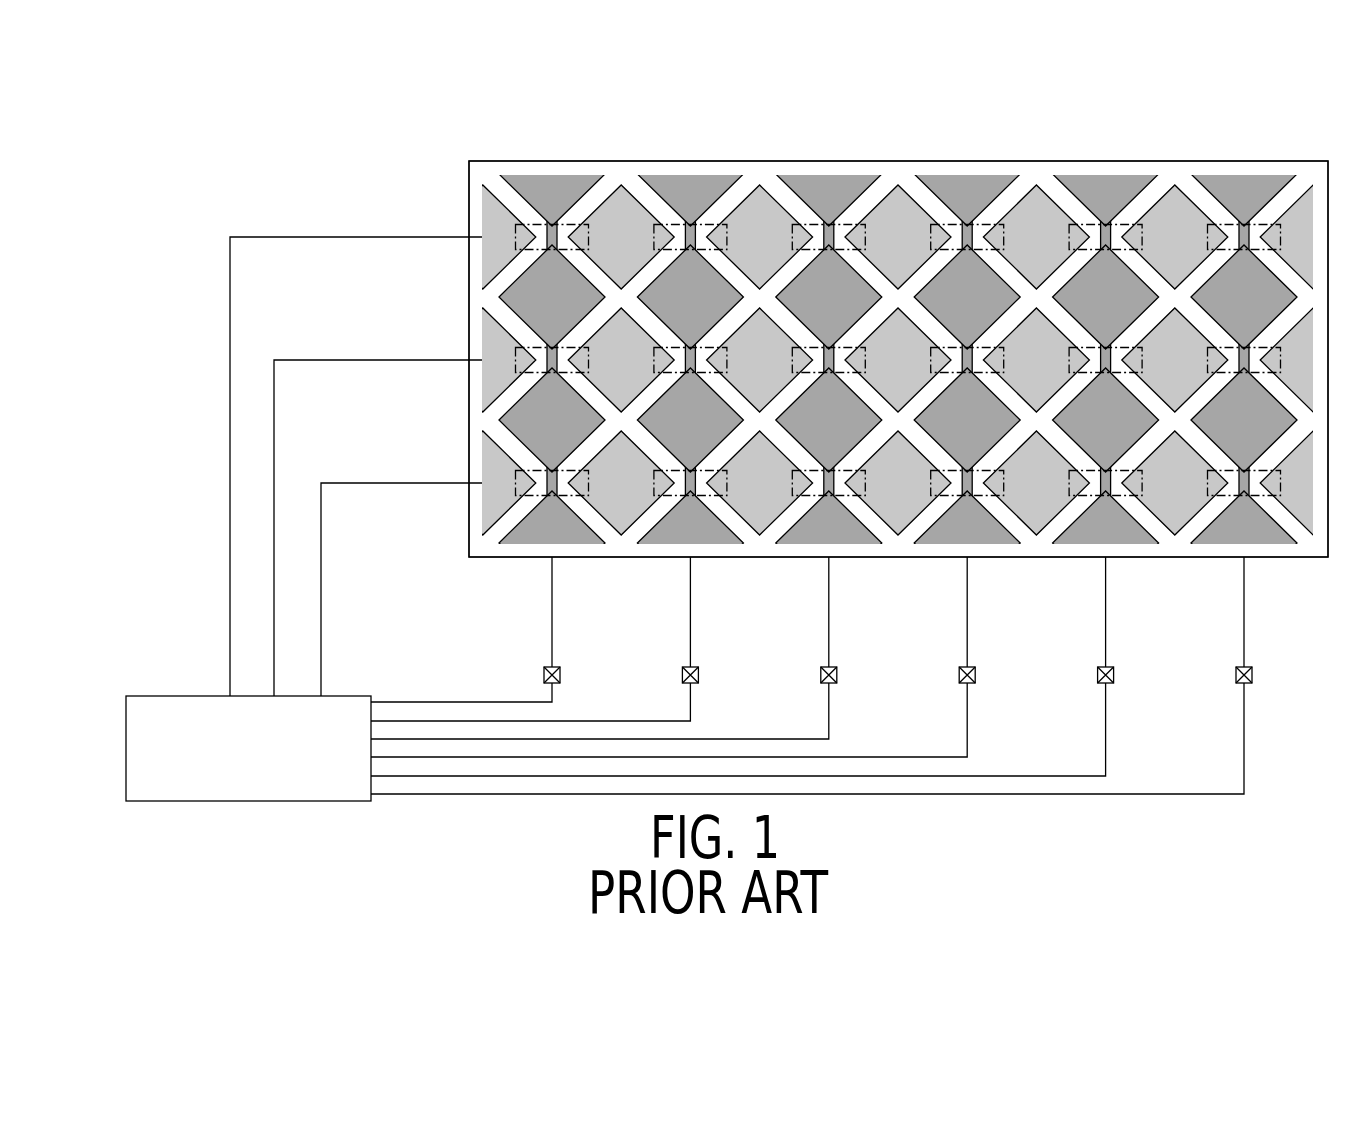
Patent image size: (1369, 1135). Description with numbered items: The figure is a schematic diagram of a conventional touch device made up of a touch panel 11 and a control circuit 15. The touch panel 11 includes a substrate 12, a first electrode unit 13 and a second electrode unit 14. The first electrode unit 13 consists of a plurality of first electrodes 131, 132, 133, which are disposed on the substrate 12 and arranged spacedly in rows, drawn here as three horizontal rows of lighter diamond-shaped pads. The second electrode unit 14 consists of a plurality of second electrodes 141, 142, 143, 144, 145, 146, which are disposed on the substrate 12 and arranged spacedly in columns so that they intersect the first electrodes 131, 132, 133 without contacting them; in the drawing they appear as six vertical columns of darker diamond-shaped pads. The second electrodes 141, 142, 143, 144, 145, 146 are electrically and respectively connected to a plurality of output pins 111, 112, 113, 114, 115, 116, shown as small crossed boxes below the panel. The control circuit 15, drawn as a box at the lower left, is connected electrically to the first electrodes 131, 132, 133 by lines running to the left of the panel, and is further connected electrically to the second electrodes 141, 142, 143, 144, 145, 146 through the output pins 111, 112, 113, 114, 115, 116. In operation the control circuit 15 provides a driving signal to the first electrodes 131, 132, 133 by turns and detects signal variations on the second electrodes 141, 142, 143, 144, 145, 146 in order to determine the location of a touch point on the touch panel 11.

The touch panel 11 is at (492, 160).
The substrate 12 is at (560, 167).
The first electrode unit 13 is at (798, 440).
The first electrode 131 is at (482, 260).
The first electrode 132 is at (482, 383).
The first electrode 133 is at (482, 506).
The second electrode unit 14 is at (898, 365).
The second electrode 141 is at (577, 547).
The second electrode 142 is at (715, 547).
The second electrode 143 is at (853, 547).
The second electrode 144 is at (991, 547).
The second electrode 145 is at (1129, 547).
The second electrode 146 is at (1268, 547).
The output pin 111 is at (560, 675).
The output pin 112 is at (698, 675).
The output pin 113 is at (837, 675).
The output pin 114 is at (975, 675).
The output pin 115 is at (1114, 675).
The output pin 116 is at (1252, 675).
The control circuit 15 is at (247, 802).